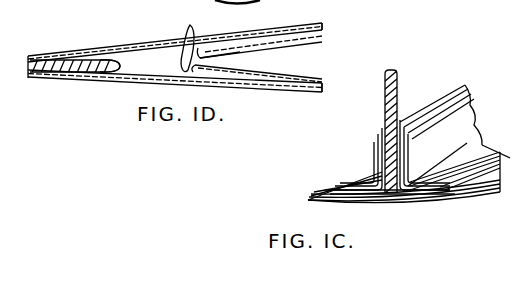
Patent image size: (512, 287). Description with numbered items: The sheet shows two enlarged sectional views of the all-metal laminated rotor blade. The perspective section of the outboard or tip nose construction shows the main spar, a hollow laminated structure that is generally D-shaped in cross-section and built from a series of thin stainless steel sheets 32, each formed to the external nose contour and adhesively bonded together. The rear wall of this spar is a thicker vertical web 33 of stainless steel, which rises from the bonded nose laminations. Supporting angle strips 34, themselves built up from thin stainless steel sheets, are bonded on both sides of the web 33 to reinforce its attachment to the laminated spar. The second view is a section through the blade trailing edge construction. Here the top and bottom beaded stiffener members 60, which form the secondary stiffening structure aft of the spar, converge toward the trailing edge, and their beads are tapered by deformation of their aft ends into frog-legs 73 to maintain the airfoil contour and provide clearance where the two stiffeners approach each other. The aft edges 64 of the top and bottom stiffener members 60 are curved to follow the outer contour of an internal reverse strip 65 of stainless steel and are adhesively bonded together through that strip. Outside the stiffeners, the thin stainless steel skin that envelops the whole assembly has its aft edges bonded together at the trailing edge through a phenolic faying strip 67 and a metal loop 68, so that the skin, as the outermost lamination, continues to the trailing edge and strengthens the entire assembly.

In FIG. 1D, the beaded stiffener member 60 is at (283, 44).
In FIG. 1D, the aft edge 64 is at (191, 35).
In FIG. 1D, the internal reverse strip 65 is at (238, 52).
In FIG. 1D, the faying strip 67 is at (60, 60).
In FIG. 1D, the metal loop 68 is at (118, 61).
In FIG. 1D, the frog-legs 73 is at (320, 67).
In FIG. 1C, the stainless steel sheets 32 is at (408, 202).
In FIG. 1C, the vertical web 33 is at (384, 112).
In FIG. 1C, the supporting angle strips 34 is at (378, 143).